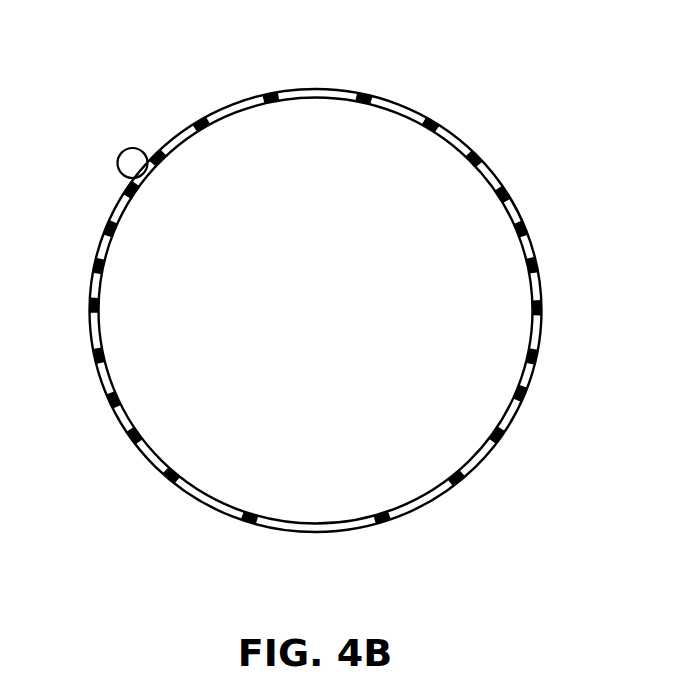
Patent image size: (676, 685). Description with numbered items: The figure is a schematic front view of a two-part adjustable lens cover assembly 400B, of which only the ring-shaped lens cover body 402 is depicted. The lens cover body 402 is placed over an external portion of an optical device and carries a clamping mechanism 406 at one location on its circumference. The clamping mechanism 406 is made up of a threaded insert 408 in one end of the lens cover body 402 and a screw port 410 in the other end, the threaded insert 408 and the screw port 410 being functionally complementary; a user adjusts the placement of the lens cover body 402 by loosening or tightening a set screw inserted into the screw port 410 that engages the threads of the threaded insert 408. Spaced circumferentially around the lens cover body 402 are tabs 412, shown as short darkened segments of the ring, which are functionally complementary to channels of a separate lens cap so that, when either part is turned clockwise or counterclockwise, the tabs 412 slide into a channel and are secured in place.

The two-part adjustable lens cover assembly 400B is at (99, 70).
The lens cover body 402 is at (502, 170).
The clamping mechanism 406 is at (114, 140).
The threaded insert 408 is at (147, 140).
The screw port 410 is at (116, 179).
The tabs 412 is at (542, 260).